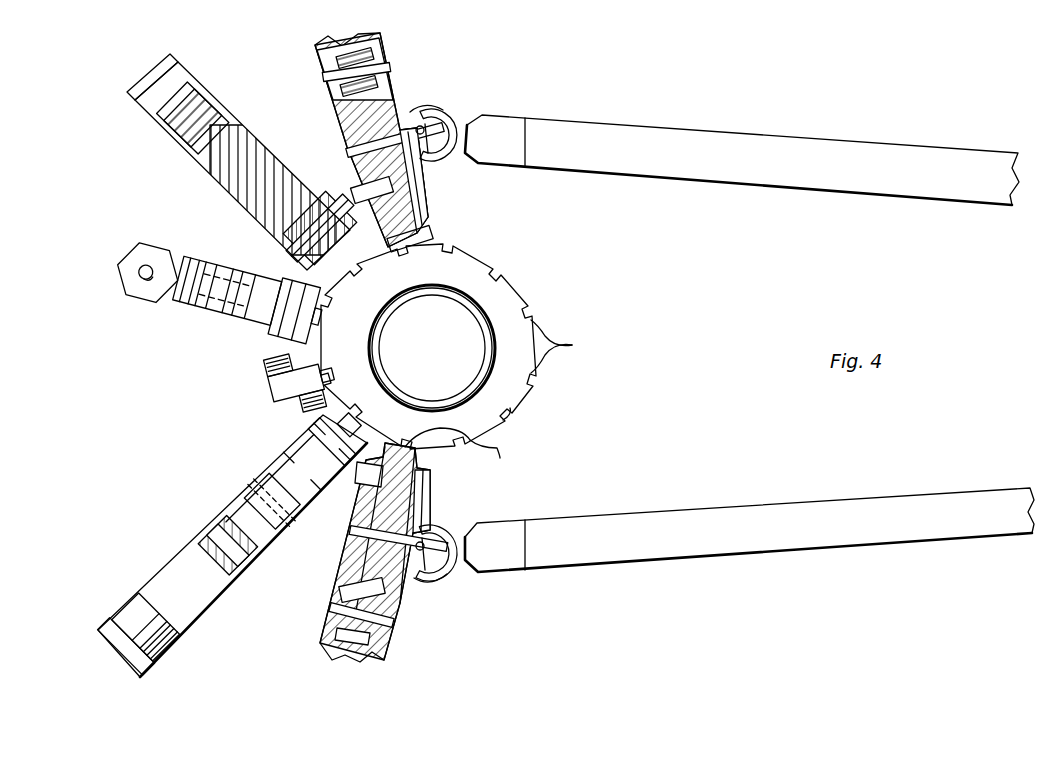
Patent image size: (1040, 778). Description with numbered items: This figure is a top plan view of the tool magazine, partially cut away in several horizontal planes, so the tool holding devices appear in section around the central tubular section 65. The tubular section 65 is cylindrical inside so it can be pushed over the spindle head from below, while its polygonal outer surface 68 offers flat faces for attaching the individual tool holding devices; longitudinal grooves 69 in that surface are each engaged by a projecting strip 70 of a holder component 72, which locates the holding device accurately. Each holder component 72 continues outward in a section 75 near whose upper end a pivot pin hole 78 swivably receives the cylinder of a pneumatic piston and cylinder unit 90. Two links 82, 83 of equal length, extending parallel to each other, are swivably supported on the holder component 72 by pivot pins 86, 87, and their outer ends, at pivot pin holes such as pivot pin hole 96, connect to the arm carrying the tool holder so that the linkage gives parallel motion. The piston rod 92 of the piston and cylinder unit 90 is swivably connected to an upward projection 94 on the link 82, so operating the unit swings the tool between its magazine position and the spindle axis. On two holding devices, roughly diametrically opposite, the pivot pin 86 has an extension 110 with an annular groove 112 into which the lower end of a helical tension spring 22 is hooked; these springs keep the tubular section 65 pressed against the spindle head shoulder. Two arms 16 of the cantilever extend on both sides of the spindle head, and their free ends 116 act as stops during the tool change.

The arm 16 is at (885, 155).
The helical tension spring 22 is at (428, 108).
The tubular section 65 is at (490, 344).
The polygonal outer surface 68 is at (522, 281).
The longitudinal groove 69 is at (500, 455).
The projecting strip 70 is at (337, 375).
The holder component 72 is at (420, 235).
The section 75 is at (190, 122).
The pivot pin hole 78 is at (190, 95).
The link 82 is at (322, 45).
The link 83 is at (360, 195).
The pivot pin 86 is at (345, 158).
The pivot pin 87 is at (430, 200).
The pneumatic piston and cylinder unit 90 is at (120, 298).
The piston rod 92 is at (140, 272).
The upward projection 94 is at (225, 535).
The pivot pin hole 96 is at (115, 620).
The extension 110 is at (455, 128).
The annular groove 112 is at (443, 122).
The free end 116 is at (510, 140).